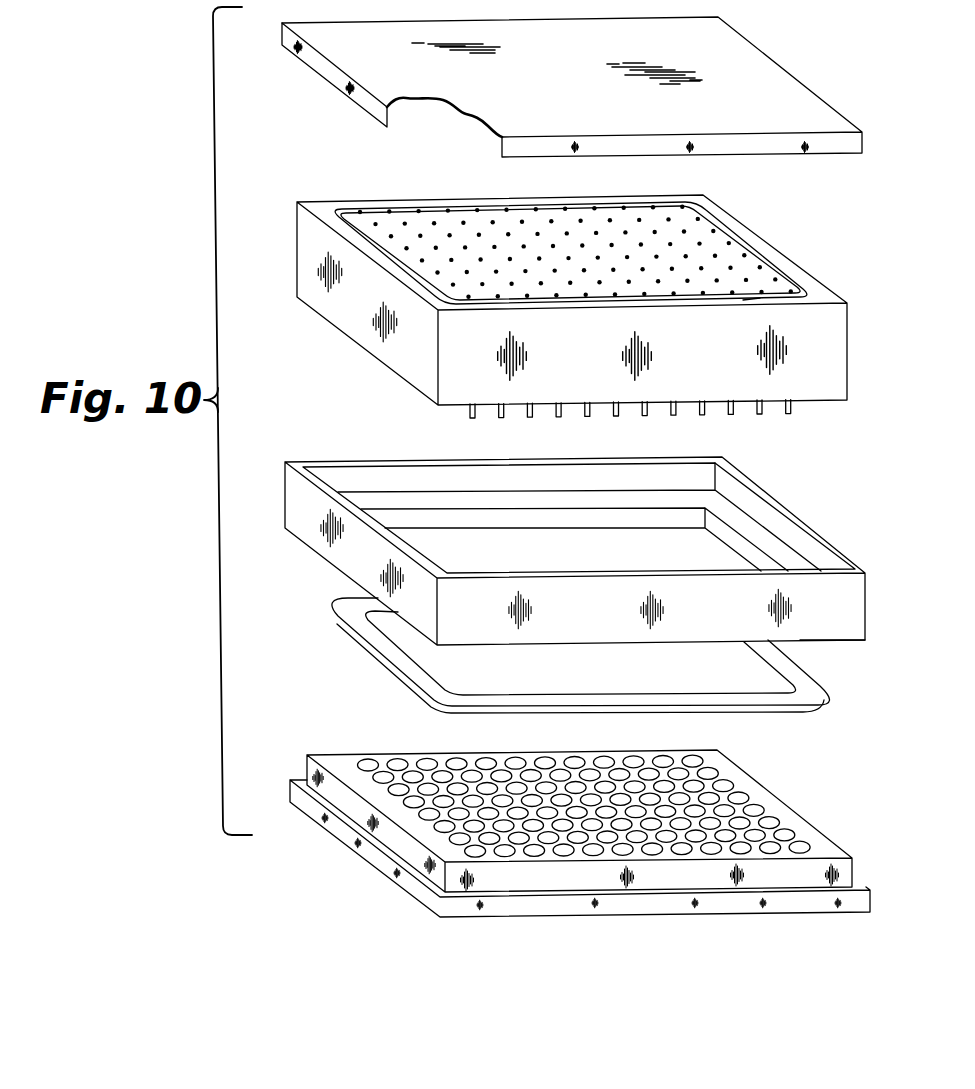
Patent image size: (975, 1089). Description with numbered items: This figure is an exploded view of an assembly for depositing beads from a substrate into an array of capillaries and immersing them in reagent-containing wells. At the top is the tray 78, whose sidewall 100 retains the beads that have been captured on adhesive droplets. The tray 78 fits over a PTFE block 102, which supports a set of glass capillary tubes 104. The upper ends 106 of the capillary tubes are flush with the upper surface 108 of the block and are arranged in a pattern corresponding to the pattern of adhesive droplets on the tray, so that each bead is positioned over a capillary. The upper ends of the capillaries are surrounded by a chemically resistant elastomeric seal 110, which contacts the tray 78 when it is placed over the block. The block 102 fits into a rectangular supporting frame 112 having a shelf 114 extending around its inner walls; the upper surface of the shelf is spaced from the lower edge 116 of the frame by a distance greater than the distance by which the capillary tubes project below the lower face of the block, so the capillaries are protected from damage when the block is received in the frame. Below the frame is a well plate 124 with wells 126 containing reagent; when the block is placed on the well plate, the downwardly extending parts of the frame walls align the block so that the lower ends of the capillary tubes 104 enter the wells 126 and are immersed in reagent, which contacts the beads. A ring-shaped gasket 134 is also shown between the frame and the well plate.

The tray 78 is at (348, 60).
The sidewall 100 is at (555, 87).
The PTFE block 102 is at (543, 311).
The glass capillary tubes 104 is at (497, 420).
The upper ends 106 is at (758, 272).
The upper surface 108 is at (708, 224).
The elastomeric seal 110 is at (745, 300).
The supporting frame 112 is at (569, 570).
The shelf 114 is at (735, 520).
The lower edge 116 is at (822, 641).
The well plate 124 is at (550, 858).
The wells 126 is at (533, 849).
The gasket 134 is at (387, 652).